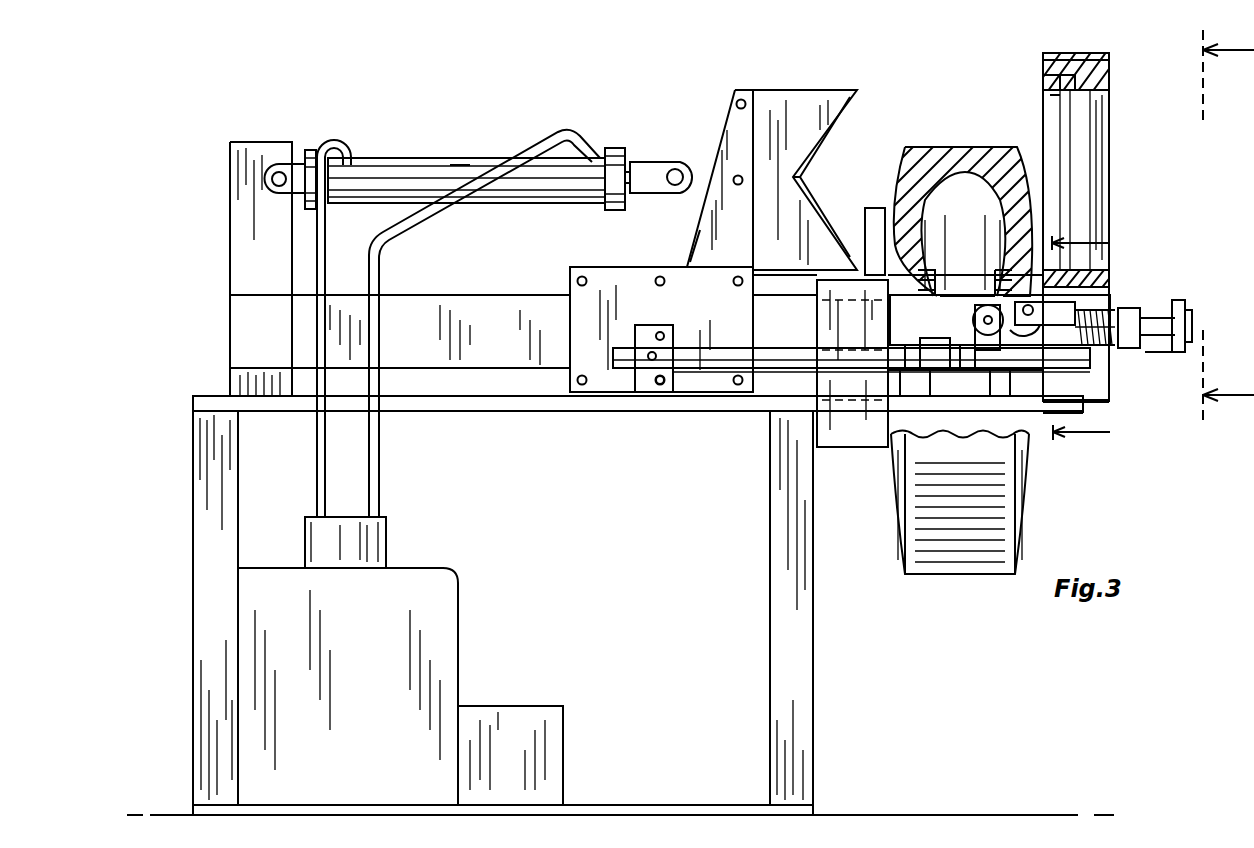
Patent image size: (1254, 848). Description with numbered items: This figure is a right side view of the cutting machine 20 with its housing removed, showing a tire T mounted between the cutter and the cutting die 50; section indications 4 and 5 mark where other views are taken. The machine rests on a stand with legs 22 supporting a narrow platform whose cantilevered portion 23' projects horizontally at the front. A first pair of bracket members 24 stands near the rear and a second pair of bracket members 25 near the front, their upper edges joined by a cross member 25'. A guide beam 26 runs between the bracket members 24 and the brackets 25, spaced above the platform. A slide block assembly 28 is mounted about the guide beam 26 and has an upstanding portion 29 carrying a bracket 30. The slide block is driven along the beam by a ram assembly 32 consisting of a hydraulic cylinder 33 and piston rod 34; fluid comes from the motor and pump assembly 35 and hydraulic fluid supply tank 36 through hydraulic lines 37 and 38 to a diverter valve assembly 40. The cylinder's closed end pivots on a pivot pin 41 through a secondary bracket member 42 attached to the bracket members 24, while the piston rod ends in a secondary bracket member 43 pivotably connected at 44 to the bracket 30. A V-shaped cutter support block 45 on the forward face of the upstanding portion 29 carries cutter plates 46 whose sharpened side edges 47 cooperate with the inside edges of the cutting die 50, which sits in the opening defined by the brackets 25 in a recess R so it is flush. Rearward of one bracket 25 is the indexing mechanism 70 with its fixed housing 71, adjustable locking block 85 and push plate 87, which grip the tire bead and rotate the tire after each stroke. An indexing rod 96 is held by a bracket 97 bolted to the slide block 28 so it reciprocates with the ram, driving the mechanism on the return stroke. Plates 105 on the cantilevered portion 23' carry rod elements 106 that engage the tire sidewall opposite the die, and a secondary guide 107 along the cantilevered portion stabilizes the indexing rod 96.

The cutting machine 20 is at (529, 123).
The legs 22 is at (193, 503).
The cantilevered portion 23' is at (1064, 448).
The bracket members 24 is at (230, 318).
The bracket members 25 is at (1104, 220).
The cross member 25' is at (1105, 48).
The guide beam 26 is at (462, 295).
The slide block assembly 28 is at (597, 268).
The upstanding portion 29 is at (735, 95).
The bracket 30 is at (705, 265).
The ram assembly 32 is at (426, 133).
The hydraulic cylinder 33 is at (475, 198).
The piston rod 34 is at (636, 148).
The motor and pump assembly 35 is at (530, 676).
The hydraulic fluid supply tank 36 is at (438, 620).
The hydraulic line 37 is at (317, 474).
The hydraulic line 38 is at (379, 464).
The diverter valve assembly 40 is at (386, 532).
The pivot pin 41 is at (272, 183).
The secondary bracket member 42 is at (307, 150).
The secondary bracket member 43 is at (665, 195).
The pivot connection 44 is at (680, 165).
The cutter support block 45 is at (798, 72).
The cutter plates 46 is at (833, 183).
The side edges 47 is at (880, 70).
The cutting die 50 is at (1043, 82).
The indexing mechanism 70 is at (975, 273).
The housing 71 is at (1060, 312).
The locking block 85 is at (1130, 325).
The push plate 87 is at (1168, 352).
The indexing rod 96 is at (765, 350).
The bracket 97 is at (641, 393).
The plates 105 is at (834, 434).
The rod elements 106 is at (875, 222).
The secondary guide 107 is at (945, 318).
The tire T is at (945, 147).
The recess R is at (1043, 97).
The dimension 5 is at (1094, 339).
The section line 4- 4 is at (1228, 225).